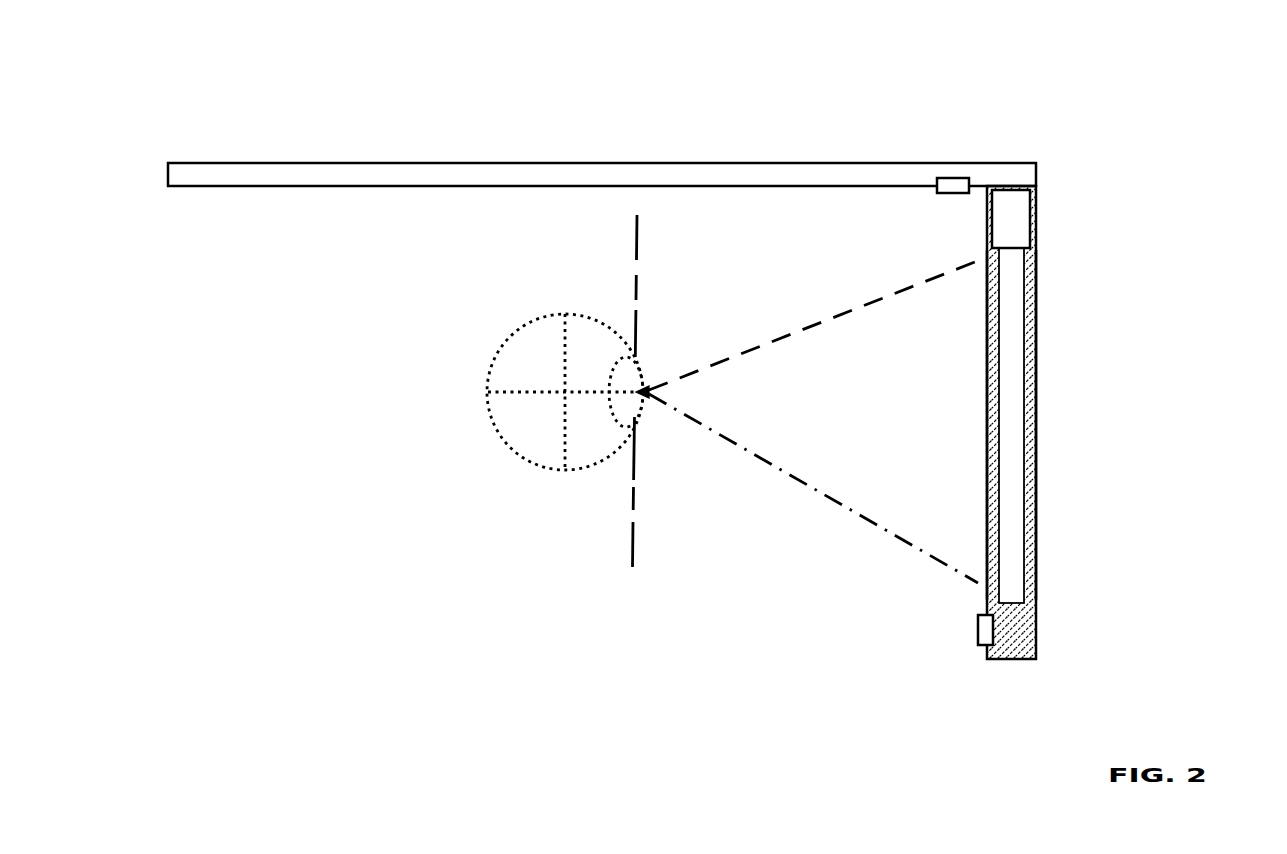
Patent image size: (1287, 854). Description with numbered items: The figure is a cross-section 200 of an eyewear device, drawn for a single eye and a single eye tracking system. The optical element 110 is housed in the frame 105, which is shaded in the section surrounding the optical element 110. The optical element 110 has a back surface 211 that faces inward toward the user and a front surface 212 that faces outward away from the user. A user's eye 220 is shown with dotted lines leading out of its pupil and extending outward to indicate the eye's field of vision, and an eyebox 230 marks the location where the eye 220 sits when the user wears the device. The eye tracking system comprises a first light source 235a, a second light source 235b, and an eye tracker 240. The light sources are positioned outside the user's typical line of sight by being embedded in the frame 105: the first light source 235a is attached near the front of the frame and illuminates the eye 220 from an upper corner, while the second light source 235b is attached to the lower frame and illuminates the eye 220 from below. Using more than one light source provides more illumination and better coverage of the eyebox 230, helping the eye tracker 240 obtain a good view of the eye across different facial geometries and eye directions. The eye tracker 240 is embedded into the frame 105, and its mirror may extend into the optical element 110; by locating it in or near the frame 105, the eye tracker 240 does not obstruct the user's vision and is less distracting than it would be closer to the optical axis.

The cross-section 200 is at (342, 62).
The frame 105 is at (890, 162).
The optical element 110 is at (1007, 303).
The back surface 211 is at (985, 378).
The front surface 212 is at (1036, 471).
The eye 220 is at (520, 328).
The eyebox 230 is at (632, 495).
The first light source 235a is at (952, 195).
The second light source 235b is at (977, 628).
The eye tracker 240 is at (1011, 228).